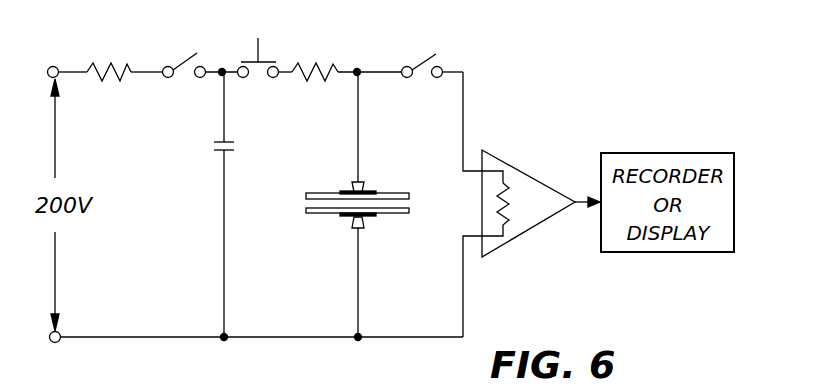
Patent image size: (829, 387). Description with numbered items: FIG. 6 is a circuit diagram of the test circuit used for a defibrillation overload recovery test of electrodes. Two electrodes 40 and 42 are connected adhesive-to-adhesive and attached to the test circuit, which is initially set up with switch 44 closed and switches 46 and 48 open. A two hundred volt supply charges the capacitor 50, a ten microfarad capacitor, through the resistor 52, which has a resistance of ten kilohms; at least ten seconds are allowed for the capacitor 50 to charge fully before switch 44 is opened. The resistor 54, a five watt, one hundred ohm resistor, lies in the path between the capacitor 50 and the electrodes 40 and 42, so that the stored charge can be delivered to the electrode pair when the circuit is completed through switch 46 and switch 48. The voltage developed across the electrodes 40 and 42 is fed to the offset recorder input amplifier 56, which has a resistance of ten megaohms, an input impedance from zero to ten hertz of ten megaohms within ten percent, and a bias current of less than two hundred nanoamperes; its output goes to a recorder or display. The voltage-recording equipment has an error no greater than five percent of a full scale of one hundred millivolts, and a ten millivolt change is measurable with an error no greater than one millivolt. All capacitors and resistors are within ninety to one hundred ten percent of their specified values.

The electrode 40 is at (310, 185).
The electrode 42 is at (322, 222).
The switch 44 is at (190, 59).
The switch 46 is at (274, 59).
The switch 48 is at (421, 59).
The capacitor 50 is at (218, 142).
The resistor 52 is at (115, 64).
The resistor 54 is at (325, 64).
The offset recorder input amplifier 56 is at (537, 164).